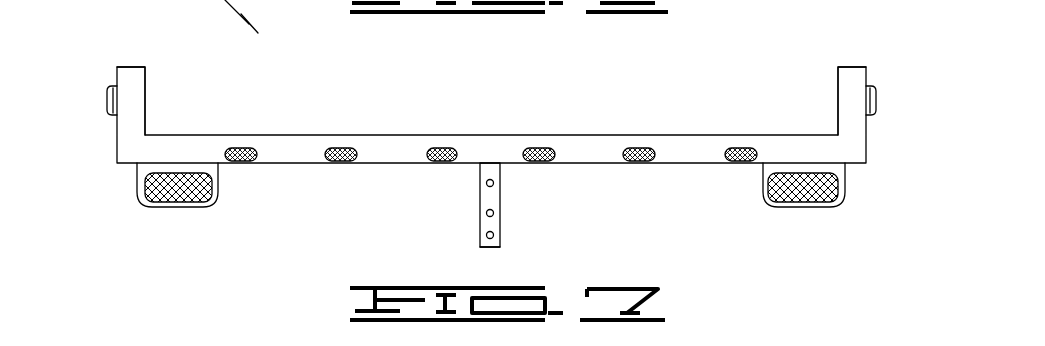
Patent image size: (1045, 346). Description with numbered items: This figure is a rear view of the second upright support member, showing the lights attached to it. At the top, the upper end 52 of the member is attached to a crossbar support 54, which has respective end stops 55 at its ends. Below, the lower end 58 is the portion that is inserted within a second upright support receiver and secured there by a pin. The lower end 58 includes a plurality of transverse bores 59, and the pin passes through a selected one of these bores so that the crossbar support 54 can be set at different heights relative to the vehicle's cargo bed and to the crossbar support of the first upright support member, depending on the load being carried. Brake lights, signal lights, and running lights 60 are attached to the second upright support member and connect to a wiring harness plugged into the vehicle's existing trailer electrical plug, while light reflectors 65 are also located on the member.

The upper end 52 is at (478, 172).
The crossbar support 54 is at (493, 148).
The end stops 55 is at (145, 82).
The lower end 58 is at (500, 247).
The transverse bores 59 is at (494, 213).
The brake lights, signal lights, and running lights 60 is at (172, 190).
The light reflectors 65 is at (107, 97).